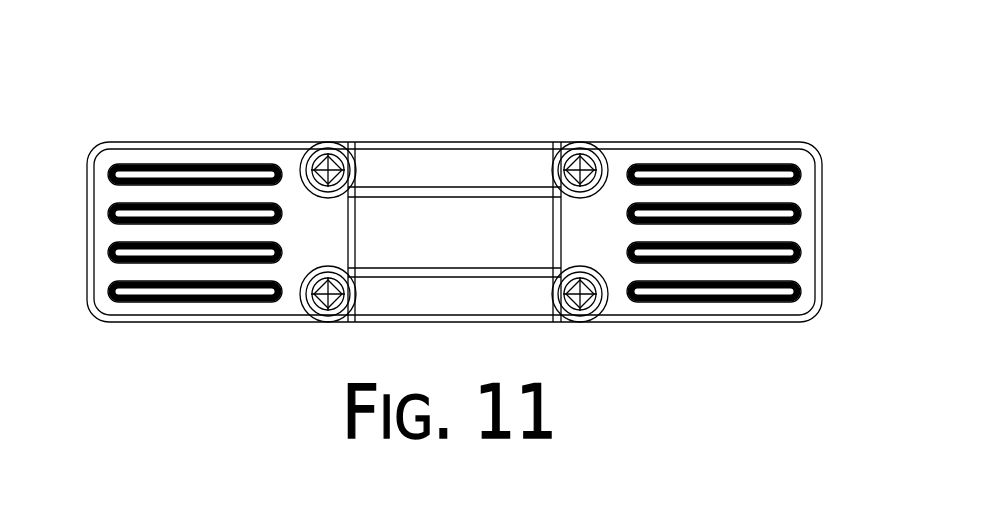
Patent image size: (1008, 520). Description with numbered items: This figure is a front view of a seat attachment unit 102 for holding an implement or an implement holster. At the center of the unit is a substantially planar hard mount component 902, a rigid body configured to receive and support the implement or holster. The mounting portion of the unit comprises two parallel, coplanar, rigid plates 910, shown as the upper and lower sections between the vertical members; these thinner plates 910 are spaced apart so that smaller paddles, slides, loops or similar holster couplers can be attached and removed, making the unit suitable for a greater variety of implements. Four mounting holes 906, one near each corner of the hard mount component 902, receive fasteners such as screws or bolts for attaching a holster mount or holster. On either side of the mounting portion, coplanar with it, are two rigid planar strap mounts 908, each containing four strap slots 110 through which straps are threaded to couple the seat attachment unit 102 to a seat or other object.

The seat attachment unit 102 is at (786, 63).
The strap slots 110 is at (162, 292).
The hard mount component 902 is at (528, 143).
The mounting holes 906 is at (582, 290).
The strap mounts 908 is at (120, 145).
The plates 910 is at (453, 178).